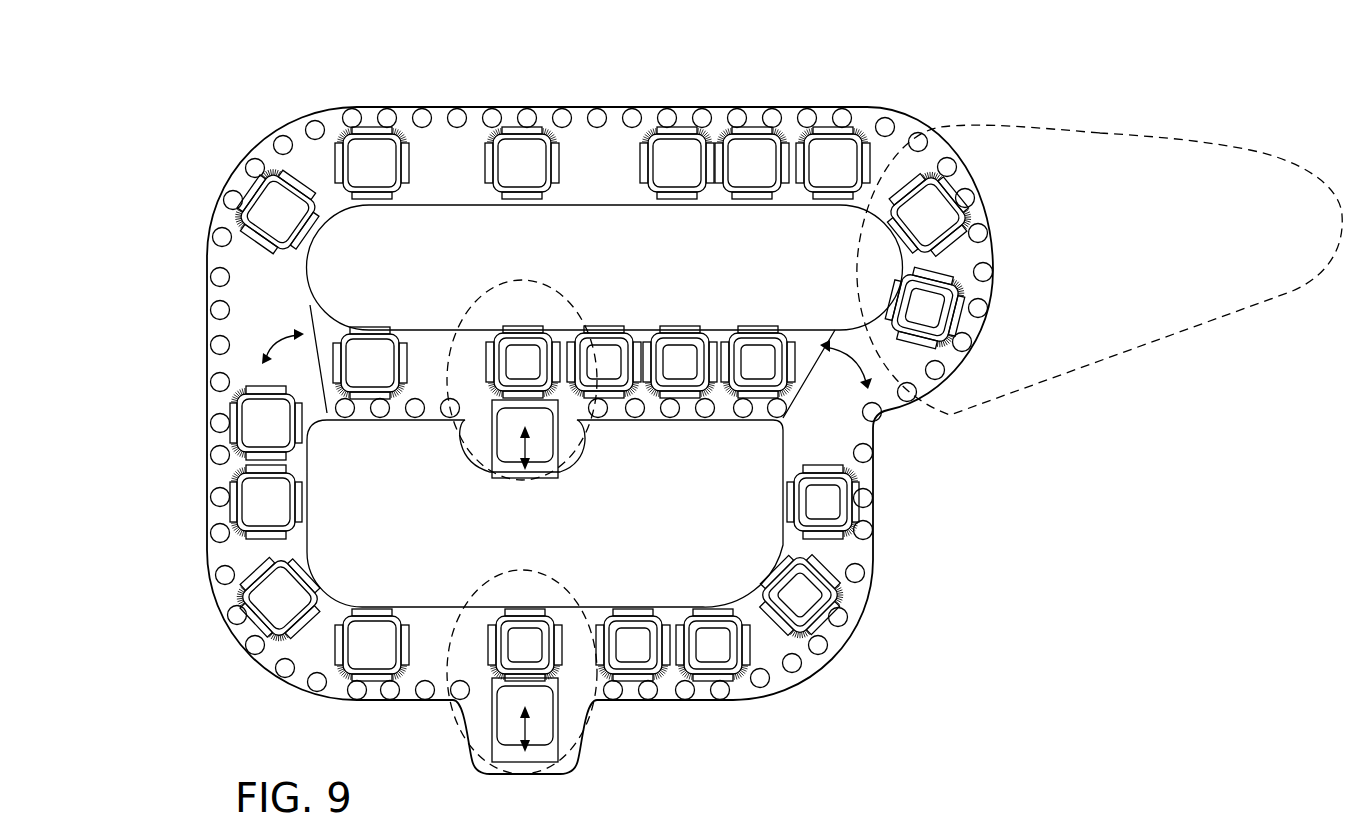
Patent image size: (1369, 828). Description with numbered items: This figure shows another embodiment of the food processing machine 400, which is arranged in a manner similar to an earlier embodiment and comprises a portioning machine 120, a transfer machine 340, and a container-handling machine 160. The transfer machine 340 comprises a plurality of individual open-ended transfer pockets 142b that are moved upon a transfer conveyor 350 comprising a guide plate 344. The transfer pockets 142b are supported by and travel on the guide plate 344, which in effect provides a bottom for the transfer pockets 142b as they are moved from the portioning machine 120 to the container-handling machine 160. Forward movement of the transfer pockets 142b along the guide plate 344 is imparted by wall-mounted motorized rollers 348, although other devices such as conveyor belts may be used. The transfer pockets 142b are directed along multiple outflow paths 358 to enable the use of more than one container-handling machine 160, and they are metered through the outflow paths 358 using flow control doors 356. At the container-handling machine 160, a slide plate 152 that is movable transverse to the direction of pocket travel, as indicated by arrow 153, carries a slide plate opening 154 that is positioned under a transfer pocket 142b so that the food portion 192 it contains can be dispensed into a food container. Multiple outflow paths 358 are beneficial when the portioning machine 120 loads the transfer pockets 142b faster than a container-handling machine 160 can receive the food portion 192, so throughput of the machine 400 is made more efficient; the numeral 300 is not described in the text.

The food processing machine 400 is at (780, 51).
The plate 300 is at (402, 107).
The wall-mounted motorized rollers 348 is at (622, 107).
The guide plate 344 is at (305, 162).
The portioning machine 120 is at (1112, 116).
The transfer conveyor 350 is at (210, 272).
The food portion 192 is at (683, 352).
The flow control doors 356 is at (305, 345).
The outflow paths 358 is at (688, 415).
The slide plate 152 is at (492, 438).
The arrow 153 is at (532, 448).
The slide plate opening 154 is at (510, 468).
The transfer pockets 142b is at (857, 533).
The transfer machine 340 is at (180, 463).
The container-handling machine 160 is at (588, 718).